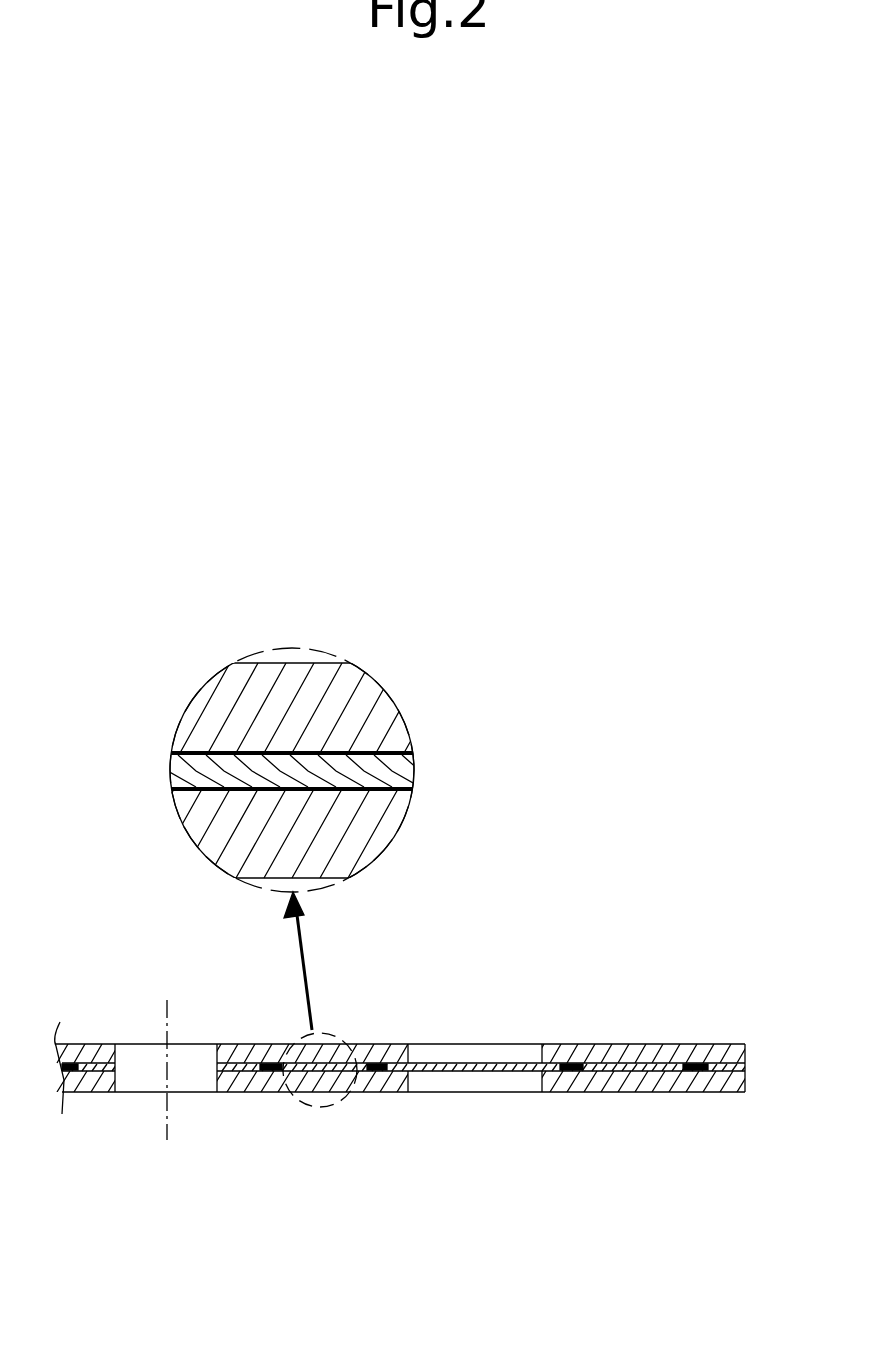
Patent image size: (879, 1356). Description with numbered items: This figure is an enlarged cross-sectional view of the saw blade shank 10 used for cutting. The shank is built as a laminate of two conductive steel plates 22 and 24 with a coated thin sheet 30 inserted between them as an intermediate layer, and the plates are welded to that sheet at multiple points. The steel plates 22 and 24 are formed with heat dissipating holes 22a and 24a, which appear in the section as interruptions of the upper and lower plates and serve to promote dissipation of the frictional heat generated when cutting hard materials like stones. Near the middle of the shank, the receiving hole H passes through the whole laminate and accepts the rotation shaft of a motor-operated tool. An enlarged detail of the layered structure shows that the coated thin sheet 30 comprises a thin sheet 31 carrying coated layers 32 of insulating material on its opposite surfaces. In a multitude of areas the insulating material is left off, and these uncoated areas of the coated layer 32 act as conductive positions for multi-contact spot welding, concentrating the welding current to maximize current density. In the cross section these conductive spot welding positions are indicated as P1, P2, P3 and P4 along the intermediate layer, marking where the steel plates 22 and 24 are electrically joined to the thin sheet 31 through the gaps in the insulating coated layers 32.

The saw blade shank 10 is at (234, 1140).
The conductive steel plate 22 is at (207, 707).
The heat dissipating hole 22a is at (470, 1044).
The conductive steel plate 24 is at (197, 828).
The heat dissipating hole 24a is at (477, 1092).
The coated thin sheet 30 is at (404, 847).
The thin sheet 31 is at (400, 770).
The coated layer 32 is at (383, 718).
The receiving hole H is at (128, 1092).
The conductive spot welding position P1 is at (278, 1092).
The conductive spot welding position P2 is at (388, 1092).
The conductive spot welding position P3 is at (583, 1092).
The conductive spot welding position P4 is at (707, 1092).